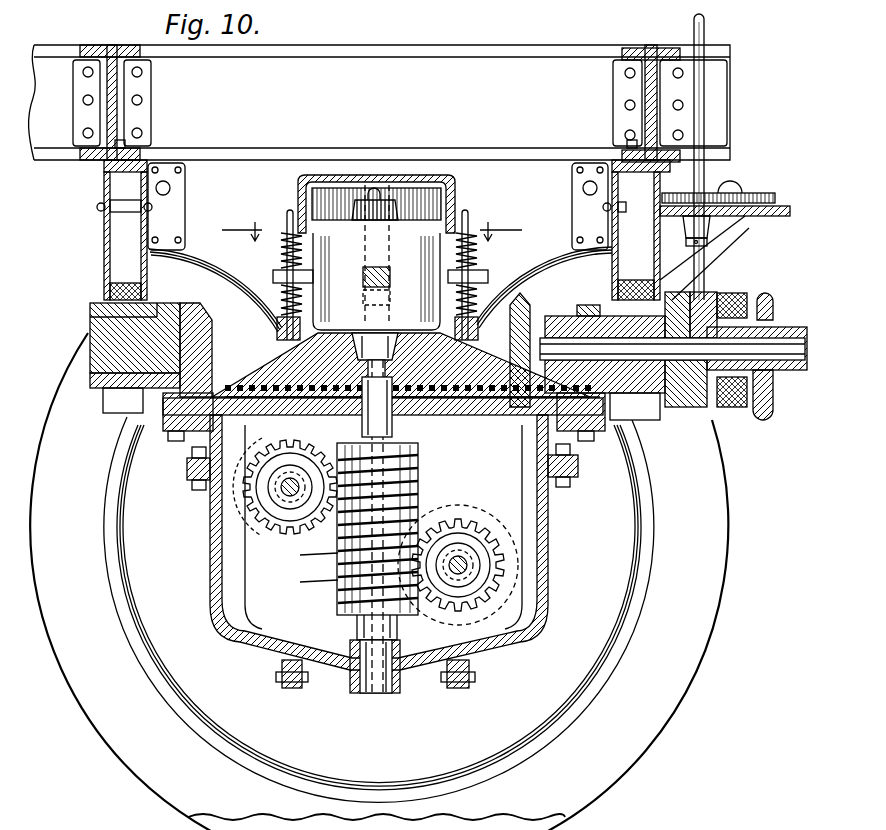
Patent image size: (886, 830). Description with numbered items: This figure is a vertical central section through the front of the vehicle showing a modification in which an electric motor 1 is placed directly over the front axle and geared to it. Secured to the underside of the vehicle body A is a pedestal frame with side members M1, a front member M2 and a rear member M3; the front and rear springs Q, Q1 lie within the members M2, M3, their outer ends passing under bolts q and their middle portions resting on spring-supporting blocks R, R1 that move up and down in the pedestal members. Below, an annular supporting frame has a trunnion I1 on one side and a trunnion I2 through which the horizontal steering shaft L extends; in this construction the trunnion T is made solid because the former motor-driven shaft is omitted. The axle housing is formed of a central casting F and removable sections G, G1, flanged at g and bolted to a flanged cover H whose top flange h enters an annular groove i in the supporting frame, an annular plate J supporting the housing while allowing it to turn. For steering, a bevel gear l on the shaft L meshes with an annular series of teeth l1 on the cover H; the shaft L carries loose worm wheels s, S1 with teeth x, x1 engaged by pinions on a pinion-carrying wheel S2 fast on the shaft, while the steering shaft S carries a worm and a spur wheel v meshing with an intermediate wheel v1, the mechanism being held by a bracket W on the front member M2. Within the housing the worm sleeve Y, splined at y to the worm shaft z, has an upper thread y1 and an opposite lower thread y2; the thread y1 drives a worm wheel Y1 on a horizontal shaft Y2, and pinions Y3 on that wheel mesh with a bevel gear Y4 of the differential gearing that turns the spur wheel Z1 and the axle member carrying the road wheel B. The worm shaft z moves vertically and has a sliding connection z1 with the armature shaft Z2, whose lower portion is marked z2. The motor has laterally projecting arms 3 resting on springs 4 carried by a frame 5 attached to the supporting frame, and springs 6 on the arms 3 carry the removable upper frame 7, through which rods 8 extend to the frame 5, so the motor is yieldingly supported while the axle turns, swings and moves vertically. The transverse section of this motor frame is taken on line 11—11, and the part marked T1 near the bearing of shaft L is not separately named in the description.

The vehicle body A is at (379, 103).
The road wheel B is at (379, 581).
The steering shaft S is at (708, 36).
The side member M1 is at (187, 206).
The front member M2 is at (572, 186).
The rear member M3 is at (104, 190).
The bolt q is at (97, 210).
The front spring Q is at (641, 230).
The rear spring Q1 is at (112, 290).
The bracket W is at (790, 212).
The spur wheel v is at (692, 208).
The intermediate wheel v1 is at (745, 197).
The removable upper frame 7 is at (408, 178).
The electric motor 1 is at (376, 257).
The armature shaft Z2 is at (370, 262).
The laterally projecting arms 3 is at (500, 268).
The rods 8 is at (287, 220).
The springs 6 is at (281, 258).
The springs 4 is at (378, 309).
The section line 11 is at (246, 229).
The frame 5 is at (263, 363).
The sliding connection z1 is at (393, 350).
The armature shaft z2 is at (388, 385).
The annular series of teeth l1 is at (412, 380).
The bevel gear l is at (508, 350).
The trunnion T is at (100, 323).
The spring-supporting block R is at (90, 380).
The trunnion I1 is at (190, 318).
The trunnion I2 is at (562, 318).
The annular groove i is at (105, 402).
The flanged cover H is at (383, 419).
The annular plate J is at (165, 425).
The top flange h is at (176, 442).
The flange g is at (196, 475).
The removable section G is at (210, 597).
The centrally arranged casting F is at (332, 670).
The spline y is at (398, 633).
The worm shaft z is at (357, 631).
The worm sleeve Y is at (350, 580).
The worm thread y1 is at (404, 419).
The worm thread y2 is at (317, 582).
The worm wheel Y1 is at (255, 500).
The horizontally arranged shaft Y2 is at (262, 505).
The bevel gear Y4 is at (249, 507).
The pinions Y3 is at (505, 565).
The removable section G1 is at (520, 556).
The spur wheel Z1 is at (290, 548).
The bearing T1 is at (668, 410).
The spring-supporting block R1 is at (686, 344).
The worm wheel s is at (708, 282).
The pinion-carrying wheel S2 is at (747, 295).
The worm wheel S1 is at (774, 305).
The horizontal shaft L is at (806, 352).
The teeth x is at (730, 408).
The teeth x1 is at (771, 412).